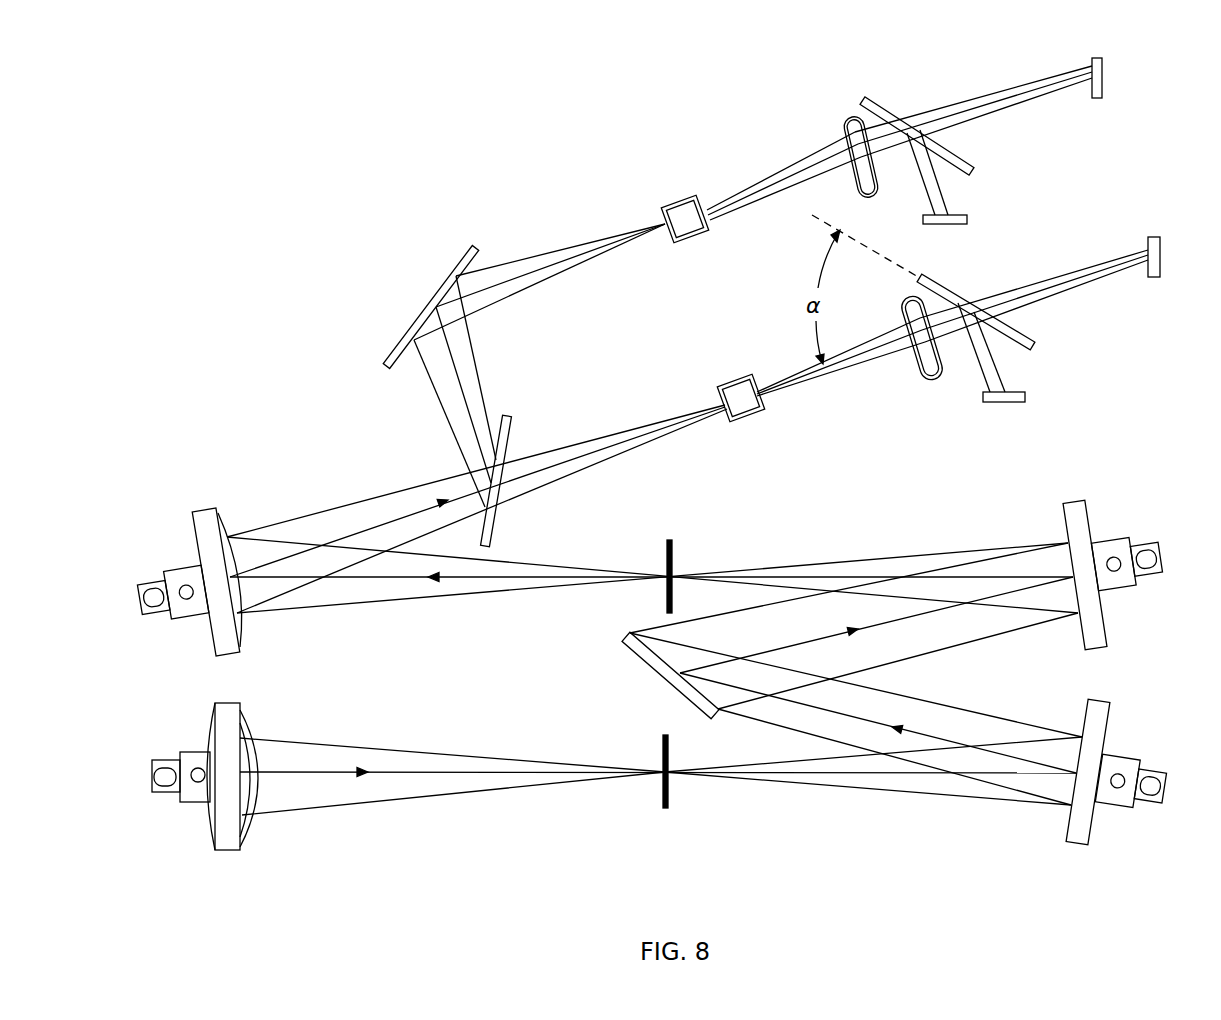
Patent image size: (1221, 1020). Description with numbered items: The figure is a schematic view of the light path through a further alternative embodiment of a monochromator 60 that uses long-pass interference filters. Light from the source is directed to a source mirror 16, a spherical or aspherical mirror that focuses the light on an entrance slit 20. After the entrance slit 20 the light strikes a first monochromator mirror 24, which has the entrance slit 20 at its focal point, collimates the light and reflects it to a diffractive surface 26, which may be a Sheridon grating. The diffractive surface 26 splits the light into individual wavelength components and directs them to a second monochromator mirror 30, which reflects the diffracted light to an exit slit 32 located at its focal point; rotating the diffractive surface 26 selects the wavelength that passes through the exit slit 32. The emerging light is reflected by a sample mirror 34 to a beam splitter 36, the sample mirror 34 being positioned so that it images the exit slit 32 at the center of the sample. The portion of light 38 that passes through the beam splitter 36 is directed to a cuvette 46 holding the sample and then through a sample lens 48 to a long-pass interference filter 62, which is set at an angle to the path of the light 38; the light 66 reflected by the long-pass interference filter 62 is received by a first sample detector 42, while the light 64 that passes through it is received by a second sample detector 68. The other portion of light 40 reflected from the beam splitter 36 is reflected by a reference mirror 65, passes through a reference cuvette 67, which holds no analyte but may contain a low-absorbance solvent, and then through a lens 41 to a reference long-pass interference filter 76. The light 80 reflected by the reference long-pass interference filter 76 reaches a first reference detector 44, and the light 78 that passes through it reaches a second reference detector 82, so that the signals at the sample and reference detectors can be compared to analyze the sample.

The source mirror 16 is at (231, 840).
The entrance slit 20 is at (668, 807).
The first monochromator mirror 24 is at (1093, 840).
The diffractive surface 26 is at (648, 656).
The second monochromator mirror 30 is at (1082, 528).
The exit slit 32 is at (676, 546).
The sample mirror 34 is at (203, 516).
The beam splitter 36 is at (512, 418).
The light 38 is at (655, 429).
The light 40 is at (537, 281).
The lens 41 is at (845, 132).
The first sample detector 42 is at (1022, 398).
The first reference detector 44 is at (966, 219).
The cuvette 46 is at (720, 386).
The sample lens 48 is at (928, 372).
The monochromator 60 is at (226, 233).
The long-pass interference filter 62 is at (950, 288).
The light 64 is at (1043, 282).
The reference mirror 65 is at (387, 366).
The light 66 is at (1010, 374).
The reference cuvette 67 is at (663, 212).
The second sample detector 68 is at (1155, 278).
The reference long-pass interference filter 76 is at (972, 169).
The light 78 is at (1006, 96).
The light 80 is at (918, 173).
The second reference detector 82 is at (1097, 99).